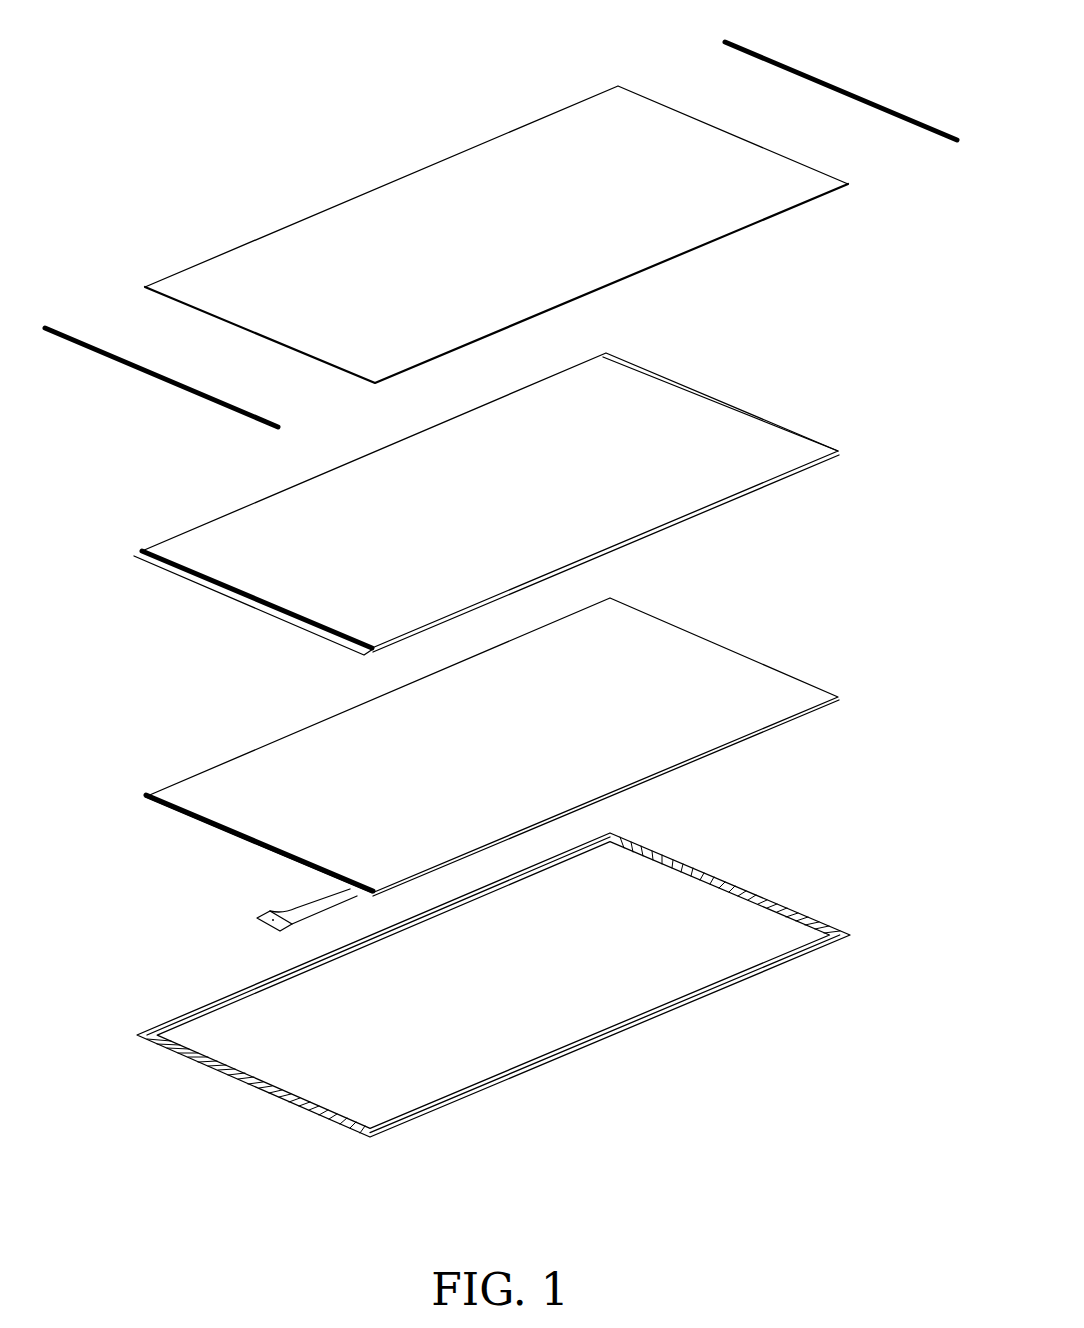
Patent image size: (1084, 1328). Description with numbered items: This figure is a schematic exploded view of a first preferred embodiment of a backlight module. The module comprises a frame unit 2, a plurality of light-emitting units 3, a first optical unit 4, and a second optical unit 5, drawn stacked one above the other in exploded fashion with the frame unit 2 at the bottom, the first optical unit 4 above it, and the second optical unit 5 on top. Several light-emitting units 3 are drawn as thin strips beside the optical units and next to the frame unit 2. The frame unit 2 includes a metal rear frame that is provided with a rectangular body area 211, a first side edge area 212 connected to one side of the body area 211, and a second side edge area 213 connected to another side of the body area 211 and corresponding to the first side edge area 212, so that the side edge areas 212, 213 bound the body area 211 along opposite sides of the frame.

The frame unit 2 is at (505, 971).
The light-emitting units 3 is at (853, 77).
The first optical unit 4 is at (858, 455).
The second optical unit 5 is at (852, 192).
The body area 211 is at (585, 1023).
The first side edge area 212 is at (238, 1097).
The second side edge area 213 is at (782, 900).